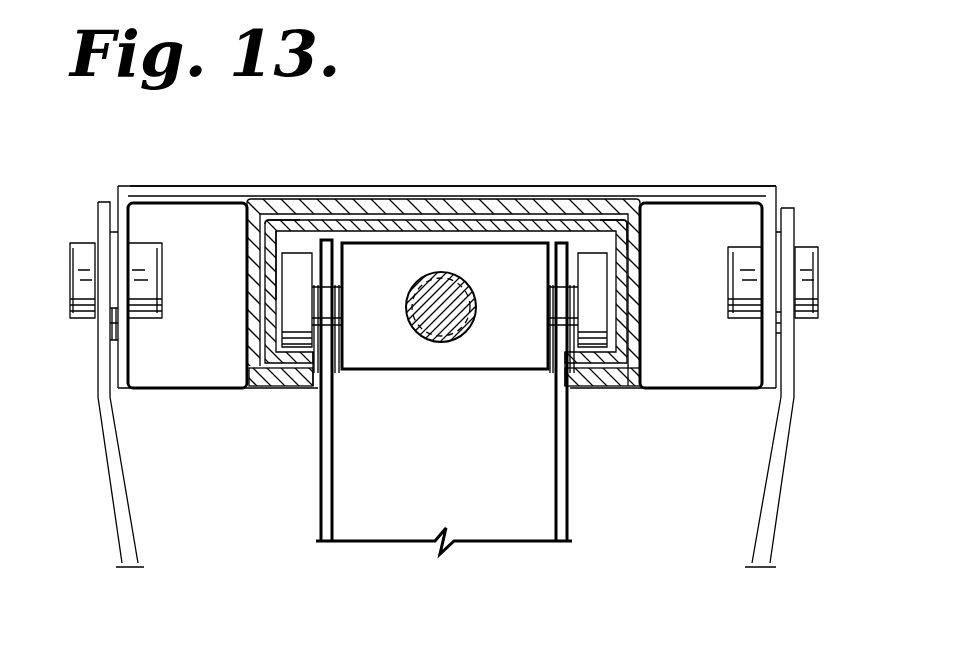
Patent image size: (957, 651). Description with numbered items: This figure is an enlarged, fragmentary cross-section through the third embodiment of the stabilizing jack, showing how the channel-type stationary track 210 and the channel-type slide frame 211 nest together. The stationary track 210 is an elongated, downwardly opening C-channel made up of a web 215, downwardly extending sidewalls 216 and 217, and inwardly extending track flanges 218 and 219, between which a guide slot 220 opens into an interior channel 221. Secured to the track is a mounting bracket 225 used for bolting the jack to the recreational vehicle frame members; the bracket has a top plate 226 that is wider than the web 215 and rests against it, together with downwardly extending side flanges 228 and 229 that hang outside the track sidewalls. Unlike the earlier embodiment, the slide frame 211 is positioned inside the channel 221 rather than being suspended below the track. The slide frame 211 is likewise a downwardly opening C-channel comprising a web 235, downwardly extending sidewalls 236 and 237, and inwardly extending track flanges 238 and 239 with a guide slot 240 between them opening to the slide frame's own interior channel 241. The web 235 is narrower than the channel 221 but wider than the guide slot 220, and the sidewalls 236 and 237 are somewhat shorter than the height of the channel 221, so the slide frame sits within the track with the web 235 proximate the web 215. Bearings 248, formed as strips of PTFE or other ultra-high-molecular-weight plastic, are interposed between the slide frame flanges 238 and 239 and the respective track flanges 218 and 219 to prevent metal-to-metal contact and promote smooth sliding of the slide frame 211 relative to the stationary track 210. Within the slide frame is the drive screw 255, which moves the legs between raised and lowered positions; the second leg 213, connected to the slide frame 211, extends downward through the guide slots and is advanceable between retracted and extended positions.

The stationary track 210 is at (442, 198).
The slide frame 211 is at (517, 217).
The second leg 213 is at (318, 528).
The web 215 is at (607, 203).
The sidewall 216 is at (248, 267).
The sidewall 217 is at (645, 283).
The track flange 218 is at (295, 390).
The track flange 219 is at (603, 395).
The guide slot 220 is at (562, 400).
The channel 221 is at (642, 227).
The mounting bracket 225 is at (290, 186).
The top plate 226 is at (209, 186).
The side flange 228 is at (110, 340).
The side flange 229 is at (778, 362).
The web 235 is at (338, 213).
The sidewall 236 is at (267, 312).
The sidewall 237 is at (643, 317).
The track flange 238 is at (318, 392).
The track flange 239 is at (633, 383).
The guide slot 240 is at (551, 362).
The channel 241 is at (268, 232).
The bearings 248 is at (295, 392).
The drive screw 255 is at (477, 297).